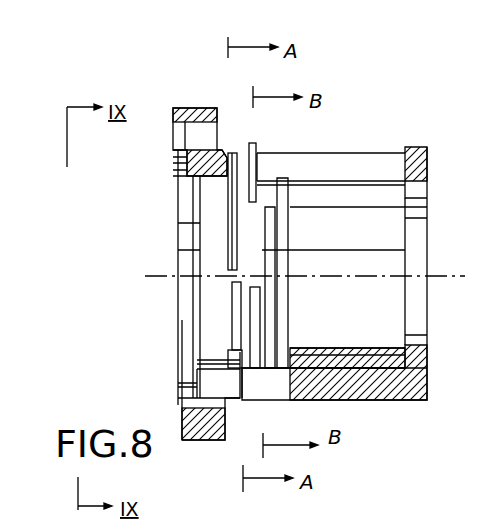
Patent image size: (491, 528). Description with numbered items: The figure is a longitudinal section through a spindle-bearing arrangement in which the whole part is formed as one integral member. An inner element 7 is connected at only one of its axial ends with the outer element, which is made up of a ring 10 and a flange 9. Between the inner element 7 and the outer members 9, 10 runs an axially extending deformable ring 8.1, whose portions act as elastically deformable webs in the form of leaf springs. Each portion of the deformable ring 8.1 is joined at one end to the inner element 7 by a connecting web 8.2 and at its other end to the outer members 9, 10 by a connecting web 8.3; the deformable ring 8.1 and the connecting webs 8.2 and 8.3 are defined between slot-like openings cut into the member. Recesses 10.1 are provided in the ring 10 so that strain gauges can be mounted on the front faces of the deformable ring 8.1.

The inner element 7 is at (405, 170).
The deformable ring 8.1 is at (232, 243).
The connecting web 8.2 is at (253, 152).
The connecting web 8.3 is at (232, 273).
The flange 9 is at (178, 158).
The ring 10 is at (178, 198).
The recess 10.1 is at (190, 398).